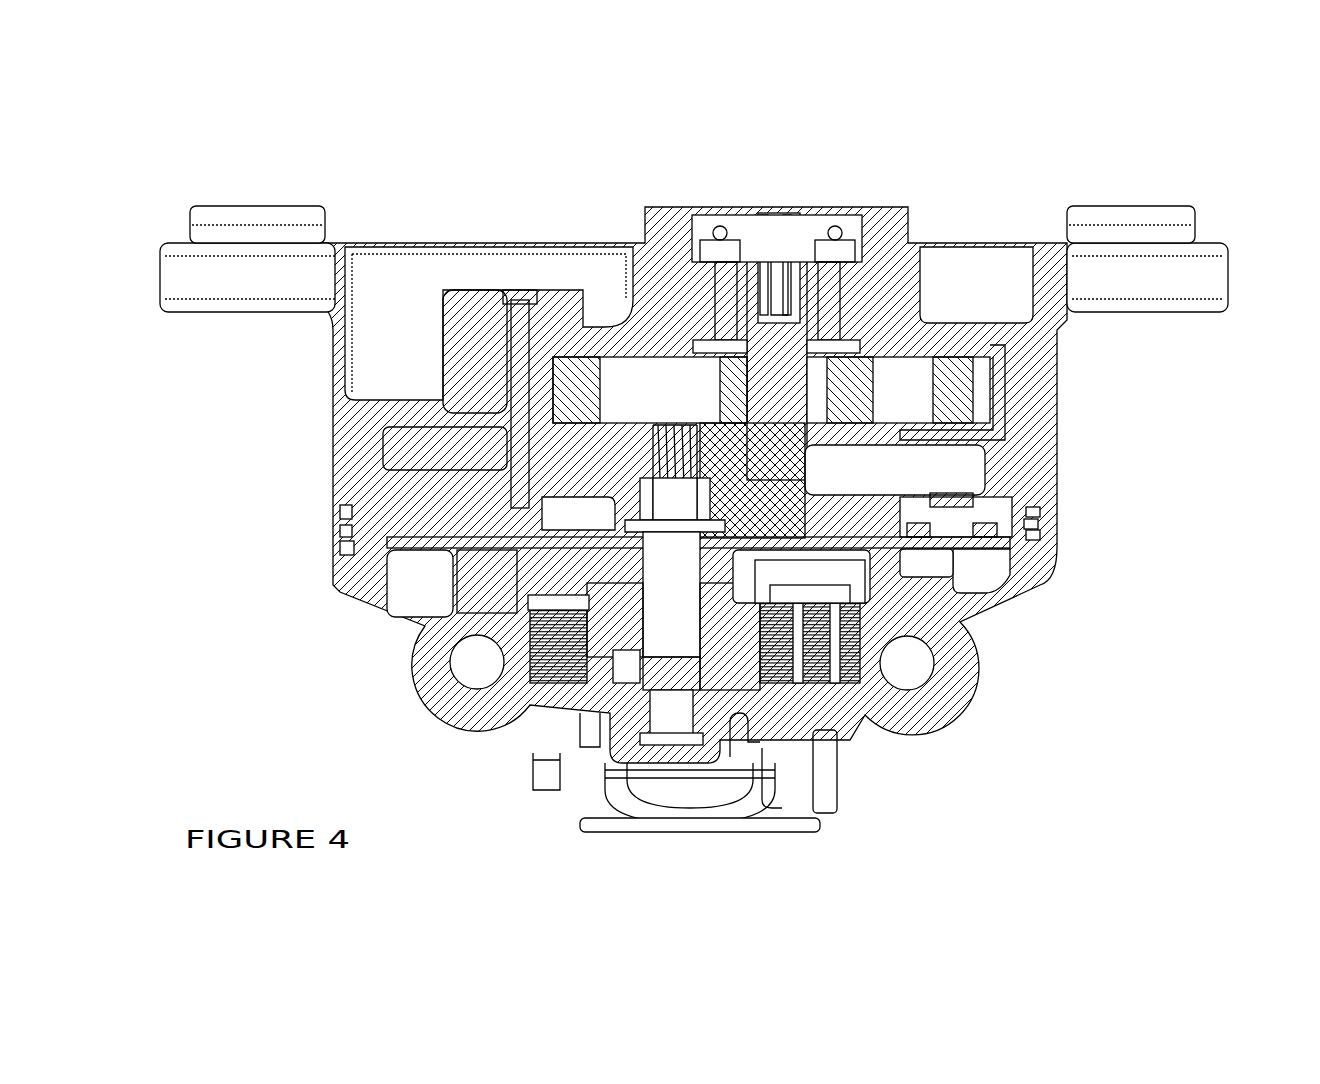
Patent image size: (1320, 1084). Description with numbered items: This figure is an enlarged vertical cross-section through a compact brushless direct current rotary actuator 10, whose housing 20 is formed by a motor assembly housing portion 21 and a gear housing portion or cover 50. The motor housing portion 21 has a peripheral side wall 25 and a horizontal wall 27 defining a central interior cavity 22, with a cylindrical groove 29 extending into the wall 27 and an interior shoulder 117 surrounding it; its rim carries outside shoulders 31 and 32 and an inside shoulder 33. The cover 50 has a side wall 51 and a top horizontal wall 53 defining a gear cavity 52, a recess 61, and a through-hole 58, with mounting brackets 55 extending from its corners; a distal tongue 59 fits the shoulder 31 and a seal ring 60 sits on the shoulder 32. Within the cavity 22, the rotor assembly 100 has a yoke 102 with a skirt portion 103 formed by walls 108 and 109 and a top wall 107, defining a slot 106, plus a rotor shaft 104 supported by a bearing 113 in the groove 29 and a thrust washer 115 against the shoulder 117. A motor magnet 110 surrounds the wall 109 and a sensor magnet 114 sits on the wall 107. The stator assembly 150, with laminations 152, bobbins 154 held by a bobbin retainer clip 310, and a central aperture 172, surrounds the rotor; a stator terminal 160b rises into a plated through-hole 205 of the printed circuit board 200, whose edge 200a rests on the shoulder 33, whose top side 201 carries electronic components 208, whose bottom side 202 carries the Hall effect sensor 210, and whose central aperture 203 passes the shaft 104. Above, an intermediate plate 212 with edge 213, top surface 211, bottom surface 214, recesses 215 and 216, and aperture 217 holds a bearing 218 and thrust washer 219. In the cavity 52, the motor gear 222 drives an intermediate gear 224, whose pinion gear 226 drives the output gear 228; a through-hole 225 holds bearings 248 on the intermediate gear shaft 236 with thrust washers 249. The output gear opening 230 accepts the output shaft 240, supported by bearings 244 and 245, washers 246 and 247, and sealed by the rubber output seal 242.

The brushless direct current rotary actuator 10 is at (1110, 175).
The housing 20 is at (1066, 425).
The motor assembly housing portion 21 is at (982, 690).
The central interior cavity 22 is at (525, 602).
The peripheral side wall 25 is at (403, 610).
The horizontal wall 27 is at (545, 727).
The cylindrical groove 29 is at (632, 757).
The shoulder 31 is at (347, 565).
The shoulder 32 is at (342, 545).
The shoulder 33 is at (378, 578).
The gear housing portion or cover 50 is at (395, 232).
The circumferential vertical side wall 51 is at (1043, 392).
The central interior gear cavity 52 is at (477, 413).
The top horizontal wall 53 is at (460, 243).
The mounting arm or bracket 55 is at (163, 243).
The cylindrical through-hole 58 is at (760, 325).
The distal tongue 59 is at (345, 536).
The seal ring 60 is at (342, 530).
The groove or recess 61 is at (515, 395).
The rotor assembly 100 is at (785, 708).
The yoke 102 is at (545, 665).
The circular skirt portion 103 is at (570, 660).
The rotor shaft 104 is at (622, 723).
The interior circumferential slot 106 is at (725, 600).
The top radial circumferential wall 107 is at (600, 595).
The interior wall 108 is at (545, 762).
The interior wall 109 is at (585, 690).
The motor magnet 110 is at (783, 745).
The bearing 113 is at (698, 750).
The sensor magnet 114 is at (990, 617).
The thrust washer 115 is at (648, 755).
The interior shoulder 117 is at (705, 725).
The stator assembly 150 is at (950, 717).
The steel laminations 152 is at (977, 657).
The bobbins 154 is at (983, 637).
The stator terminal 160b is at (835, 557).
The central aperture 172 is at (860, 665).
The printed circuit board 200 is at (413, 568).
The peripheral circumferential edge 200a is at (337, 555).
The top side 201 is at (1090, 388).
The bottom side 202 is at (983, 570).
The central aperture 203 is at (745, 550).
The plated through-holes 205 is at (803, 537).
The electronic components 208 is at (338, 515).
The Hall effect sensor 210 is at (698, 577).
The top surface 211 is at (390, 440).
The intermediate plate 212 is at (380, 462).
The peripheral circumferential edge 213 is at (360, 482).
The bottom surface 214 is at (365, 500).
The first recess 215 is at (500, 455).
The second recess 216 is at (1000, 420).
The central through aperture 217 is at (680, 425).
The bearing 218 is at (635, 507).
The thrust washer 219 is at (700, 532).
The motor gear 222 is at (700, 385).
The intermediate full gear 224 is at (480, 470).
The central interior through-hole 225 is at (510, 330).
The full pinion gear 226 is at (487, 405).
The full output gear 228 is at (972, 383).
The cylindrical through-hole 230 is at (800, 396).
The intermediate gear shaft 236 is at (522, 402).
The output shaft 240 is at (798, 330).
The rubber output seal 242 is at (690, 225).
The first output shaft bearing 244 is at (848, 292).
The second output shaft bearing 245 is at (800, 427).
The thrust washer 246 is at (705, 375).
The thrust washer 247 is at (755, 432).
The bearings 248 is at (580, 326).
The thrust washers 249 is at (543, 243).
The bobbin retainer clip 310 is at (523, 588).